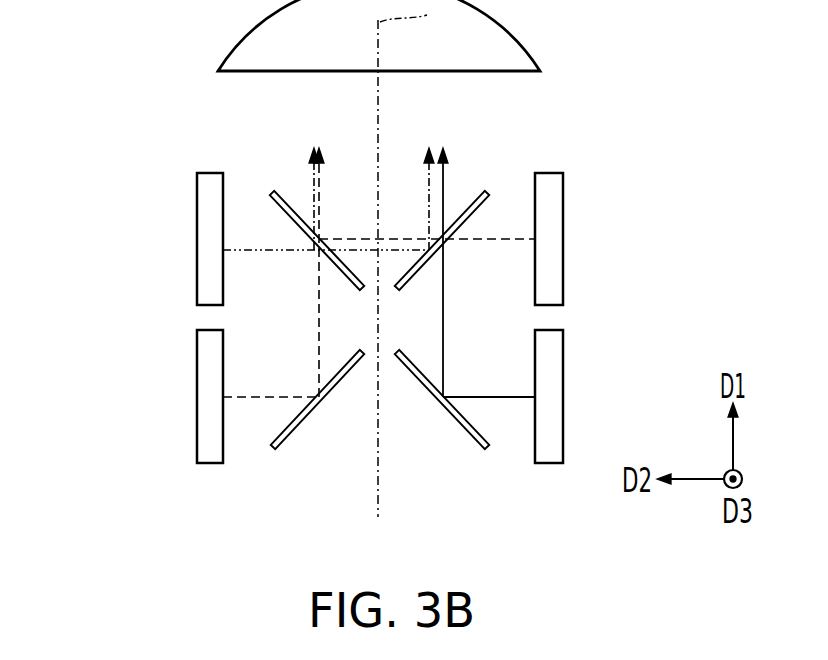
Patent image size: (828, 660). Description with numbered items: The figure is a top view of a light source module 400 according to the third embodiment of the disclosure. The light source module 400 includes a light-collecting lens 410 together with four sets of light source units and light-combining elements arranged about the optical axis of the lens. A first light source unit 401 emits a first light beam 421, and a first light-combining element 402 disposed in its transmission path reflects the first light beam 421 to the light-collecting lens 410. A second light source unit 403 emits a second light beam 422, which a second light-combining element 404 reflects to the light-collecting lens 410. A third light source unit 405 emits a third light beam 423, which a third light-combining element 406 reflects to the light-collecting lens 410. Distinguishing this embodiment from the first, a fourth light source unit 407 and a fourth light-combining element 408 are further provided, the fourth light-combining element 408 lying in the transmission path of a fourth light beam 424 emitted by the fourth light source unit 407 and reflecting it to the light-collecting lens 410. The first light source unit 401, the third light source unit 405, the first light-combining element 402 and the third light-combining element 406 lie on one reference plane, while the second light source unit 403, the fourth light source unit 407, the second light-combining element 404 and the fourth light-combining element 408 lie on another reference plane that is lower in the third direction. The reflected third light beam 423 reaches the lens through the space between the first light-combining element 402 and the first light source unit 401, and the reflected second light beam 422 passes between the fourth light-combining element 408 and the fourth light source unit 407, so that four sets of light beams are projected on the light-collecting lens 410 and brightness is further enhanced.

The light source module 400 is at (678, 46).
The light-collecting lens 410 is at (477, 110).
The first light source unit 401 is at (552, 244).
The first light-combining element 402 is at (278, 190).
The second light source unit 403 is at (208, 397).
The second light-combining element 404 is at (292, 430).
The third light source unit 405 is at (552, 397).
The third light-combining element 406 is at (458, 423).
The fourth light source unit 407 is at (208, 245).
The fourth light-combining element 408 is at (480, 192).
The first light beam 421 is at (490, 241).
The second light beam 422 is at (318, 345).
The third light beam 423 is at (445, 353).
The fourth light beam 424 is at (258, 252).